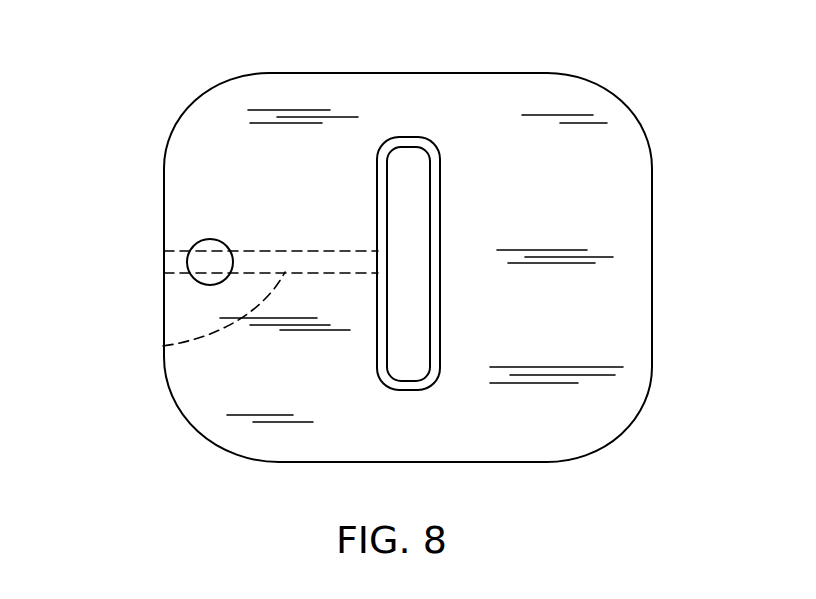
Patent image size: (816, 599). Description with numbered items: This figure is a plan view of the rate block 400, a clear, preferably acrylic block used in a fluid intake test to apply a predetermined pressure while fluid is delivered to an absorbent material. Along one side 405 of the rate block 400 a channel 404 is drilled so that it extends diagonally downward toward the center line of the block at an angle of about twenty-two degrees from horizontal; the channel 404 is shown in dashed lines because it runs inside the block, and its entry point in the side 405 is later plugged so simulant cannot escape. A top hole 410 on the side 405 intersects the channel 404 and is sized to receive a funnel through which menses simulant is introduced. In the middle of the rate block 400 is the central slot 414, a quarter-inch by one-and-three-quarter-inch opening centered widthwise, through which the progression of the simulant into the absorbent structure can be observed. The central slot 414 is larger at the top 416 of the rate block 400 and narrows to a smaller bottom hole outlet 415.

The rate block 400 is at (580, 59).
The side 405 is at (164, 185).
The central slot 414 is at (420, 238).
The top 416 is at (437, 187).
The bottom hole outlet 415 is at (432, 332).
The top hole 410 is at (193, 266).
The channel 404 is at (163, 346).